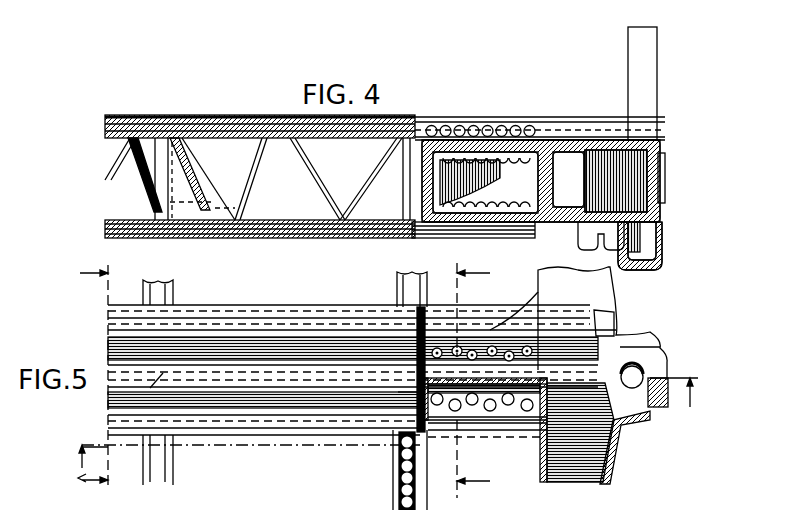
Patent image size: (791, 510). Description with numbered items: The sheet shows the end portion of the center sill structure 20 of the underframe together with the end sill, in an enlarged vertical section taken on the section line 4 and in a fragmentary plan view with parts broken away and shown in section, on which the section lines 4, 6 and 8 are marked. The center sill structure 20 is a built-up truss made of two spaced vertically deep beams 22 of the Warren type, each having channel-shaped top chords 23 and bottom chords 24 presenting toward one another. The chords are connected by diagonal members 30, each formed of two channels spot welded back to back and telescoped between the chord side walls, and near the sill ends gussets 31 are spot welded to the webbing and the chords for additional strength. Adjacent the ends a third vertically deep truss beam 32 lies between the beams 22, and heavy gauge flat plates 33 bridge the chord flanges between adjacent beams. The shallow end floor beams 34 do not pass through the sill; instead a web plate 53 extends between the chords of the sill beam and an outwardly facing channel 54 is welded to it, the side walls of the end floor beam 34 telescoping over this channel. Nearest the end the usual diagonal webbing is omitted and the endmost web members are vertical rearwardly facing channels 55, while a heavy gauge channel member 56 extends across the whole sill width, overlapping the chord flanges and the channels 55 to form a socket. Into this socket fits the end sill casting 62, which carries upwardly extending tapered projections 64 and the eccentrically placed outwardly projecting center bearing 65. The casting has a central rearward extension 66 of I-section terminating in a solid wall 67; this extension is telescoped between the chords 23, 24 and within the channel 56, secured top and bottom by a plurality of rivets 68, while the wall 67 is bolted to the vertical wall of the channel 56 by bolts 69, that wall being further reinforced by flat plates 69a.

In FIG. 4, the center sill structure 20 is at (440, 116).
In FIG. 5, the center sill structure 20 is at (272, 440).
In FIG. 5, the truss structures or beams 22 is at (305, 312).
In FIG. 4, the top chords 23 is at (200, 122).
In FIG. 4, the bottom chords 24 is at (262, 238).
In FIG. 4, the diagonal members 30 is at (241, 189).
In FIG. 4, the gussets 31 is at (338, 208).
In FIG. 5, the third vertically deep truss beam 32 is at (108, 404).
In FIG. 5, the flat plates 33 is at (194, 340).
In FIG. 5, the end floor beams 34 is at (163, 480).
In FIG. 4, the web plate 53 is at (198, 173).
In FIG. 4, the outwardly facing channel 54 is at (148, 197).
In FIG. 5, the outwardly facing channel 54 is at (170, 462).
In FIG. 4, the rearwardly facing channels 55 is at (403, 193).
In FIG. 5, the rearwardly facing channels 55 is at (395, 466).
In FIG. 4, the heavy gauge channel member 56 is at (455, 240).
In FIG. 5, the heavy gauge channel member 56 is at (422, 428).
In FIG. 4, the end sill casting 62 is at (543, 160).
In FIG. 5, the end sill casting 62 is at (624, 458).
In FIG. 4, the tapered projections 64 is at (627, 82).
In FIG. 4, the center bearing 65 is at (640, 262).
In FIG. 5, the center bearing 65 is at (655, 421).
In FIG. 4, the central rearward extension 66 is at (516, 196).
In FIG. 5, the central rearward extension 66 is at (545, 412).
In FIG. 4, the solid wall 67 is at (468, 134).
In FIG. 4, the rivets 68 is at (547, 222).
In FIG. 5, the rivets 68 is at (508, 411).
In FIG. 5, the bolts 69 is at (444, 404).
In FIG. 5, the flat plates 69a is at (398, 392).
In FIG. 5, the section line 4— 4 is at (379, 424).
In FIG. 5, the section line 6— 6 is at (85, 384).
In FIG. 5, the section line 8— 8 is at (480, 380).